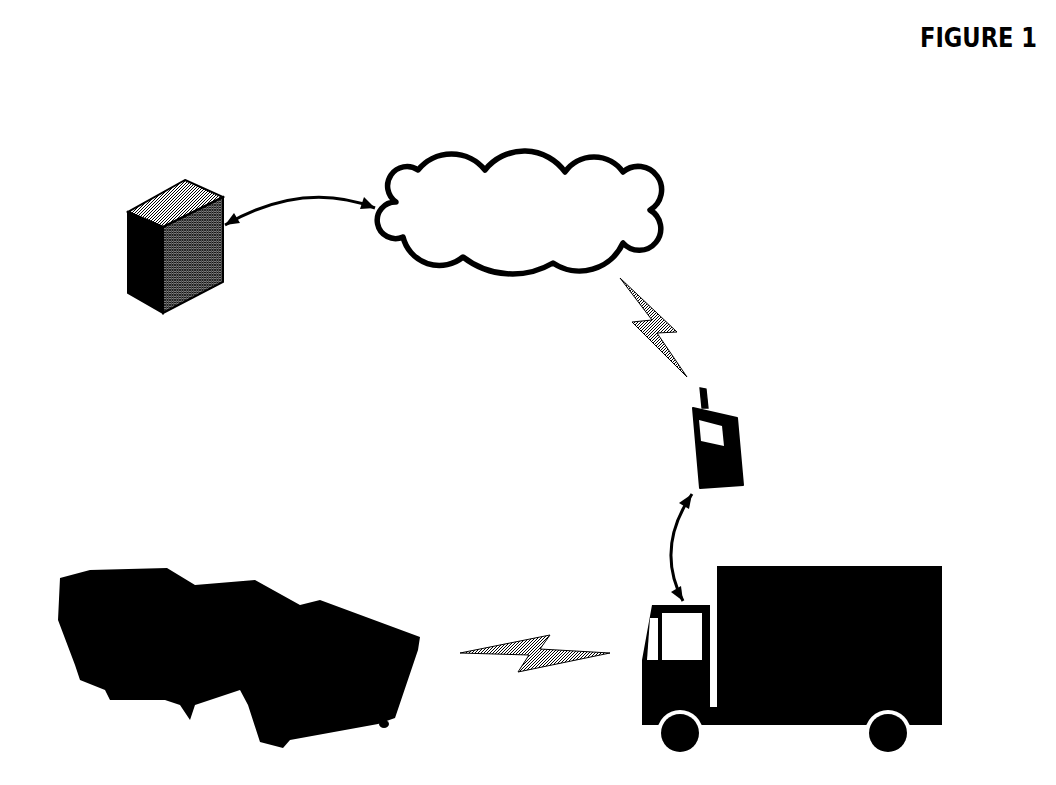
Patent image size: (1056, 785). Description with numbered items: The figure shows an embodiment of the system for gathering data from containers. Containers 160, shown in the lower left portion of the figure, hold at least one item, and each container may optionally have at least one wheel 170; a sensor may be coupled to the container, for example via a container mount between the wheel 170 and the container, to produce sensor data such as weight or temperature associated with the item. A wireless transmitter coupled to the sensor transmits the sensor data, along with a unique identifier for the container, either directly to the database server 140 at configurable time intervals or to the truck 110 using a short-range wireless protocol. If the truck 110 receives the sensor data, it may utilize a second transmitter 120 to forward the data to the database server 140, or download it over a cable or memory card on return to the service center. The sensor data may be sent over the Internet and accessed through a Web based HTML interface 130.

The truck 110 is at (900, 566).
The handheld mobile device 120 is at (745, 424).
The Web based HTML interface 130 is at (418, 165).
The database server 140 is at (132, 203).
The containers 160 is at (397, 618).
The wheel 170 is at (387, 728).